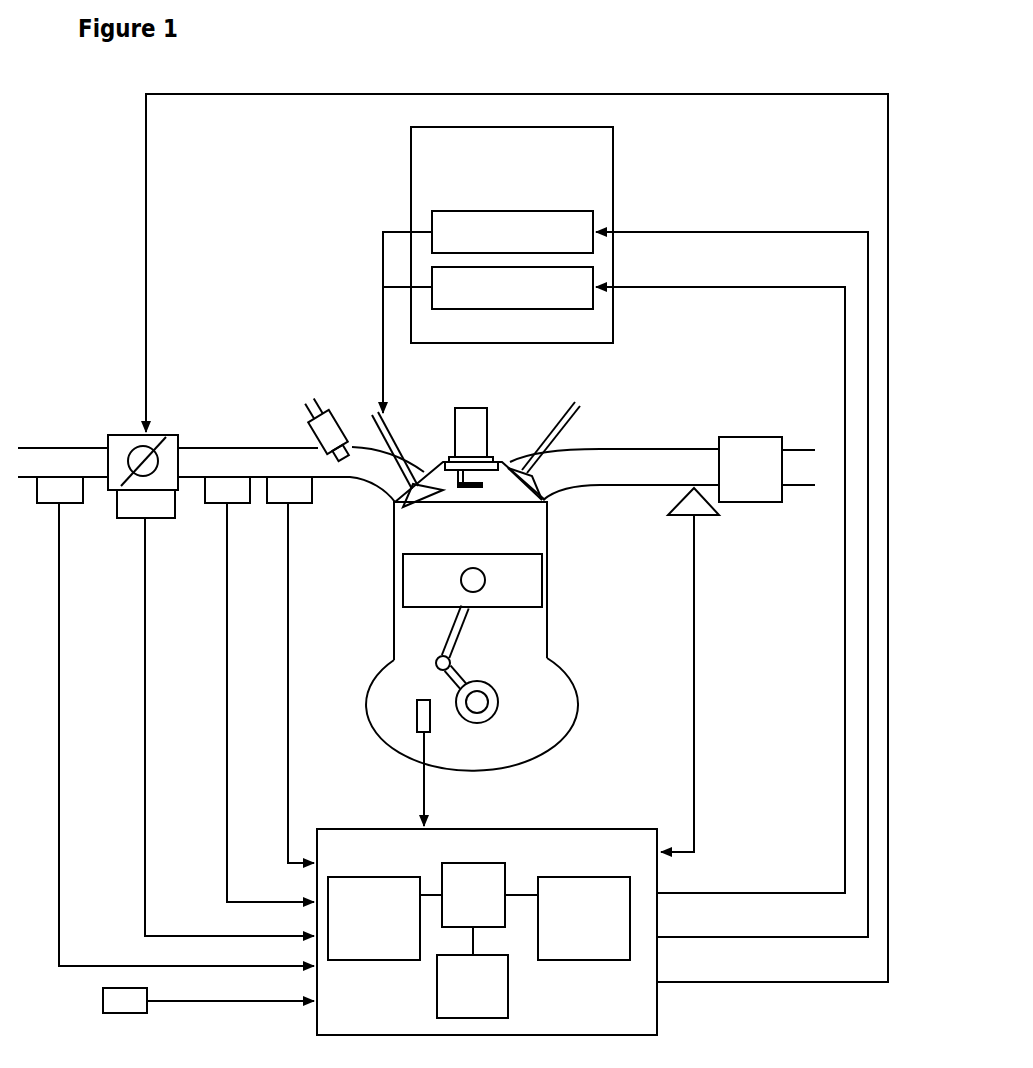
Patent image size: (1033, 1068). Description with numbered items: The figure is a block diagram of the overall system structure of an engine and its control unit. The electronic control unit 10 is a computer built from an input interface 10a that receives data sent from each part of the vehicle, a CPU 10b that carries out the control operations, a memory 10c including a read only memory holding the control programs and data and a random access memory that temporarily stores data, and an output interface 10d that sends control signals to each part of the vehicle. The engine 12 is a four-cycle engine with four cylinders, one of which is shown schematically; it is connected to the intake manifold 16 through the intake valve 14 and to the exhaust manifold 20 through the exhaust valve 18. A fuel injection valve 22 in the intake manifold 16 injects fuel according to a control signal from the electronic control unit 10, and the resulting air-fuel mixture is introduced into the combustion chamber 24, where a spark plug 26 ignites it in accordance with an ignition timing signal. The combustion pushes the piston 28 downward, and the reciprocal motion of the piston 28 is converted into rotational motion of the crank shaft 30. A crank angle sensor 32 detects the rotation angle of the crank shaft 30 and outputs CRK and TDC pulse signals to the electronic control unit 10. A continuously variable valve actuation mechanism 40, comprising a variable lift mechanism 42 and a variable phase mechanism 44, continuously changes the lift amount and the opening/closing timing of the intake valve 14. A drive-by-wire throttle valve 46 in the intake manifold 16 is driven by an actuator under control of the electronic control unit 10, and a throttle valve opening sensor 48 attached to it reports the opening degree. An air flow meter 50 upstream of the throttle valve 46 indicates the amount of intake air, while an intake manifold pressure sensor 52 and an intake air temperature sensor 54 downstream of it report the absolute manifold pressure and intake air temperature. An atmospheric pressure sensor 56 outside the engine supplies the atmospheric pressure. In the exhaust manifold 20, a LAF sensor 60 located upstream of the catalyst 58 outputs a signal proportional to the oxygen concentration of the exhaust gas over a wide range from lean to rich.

The electronic control unit 10 is at (583, 830).
The input interface 10a is at (377, 877).
The CPU 10b is at (473, 863).
The memory 10c is at (509, 988).
The output interface 10d is at (587, 877).
The engine 12 is at (594, 615).
The intake valve 14 is at (400, 445).
The intake manifold 16 is at (370, 484).
The exhaust valve 18 is at (580, 417).
The exhaust manifold 20 is at (615, 450).
The fuel injection valve 22 is at (335, 410).
The combustion chamber 24 is at (484, 542).
The spark plug 26 is at (487, 410).
The piston 28 is at (545, 568).
The crank shaft 30 is at (500, 702).
The crank angle sensor 32 is at (415, 717).
The continuously variable valve actuation mechanism 40 is at (615, 155).
The variable lift mechanism 42 is at (535, 212).
The variable phase mechanism 44 is at (543, 310).
The throttle valve 46 is at (167, 434).
The throttle valve opening sensor 48 is at (160, 518).
The air flow meter 50 is at (72, 503).
The intake manifold pressure sensor 52 is at (237, 503).
The intake air temperature sensor 54 is at (298, 503).
The atmospheric pressure sensor 56 is at (123, 1015).
The catalyst 58 is at (757, 437).
The LAF sensor 60 is at (712, 517).